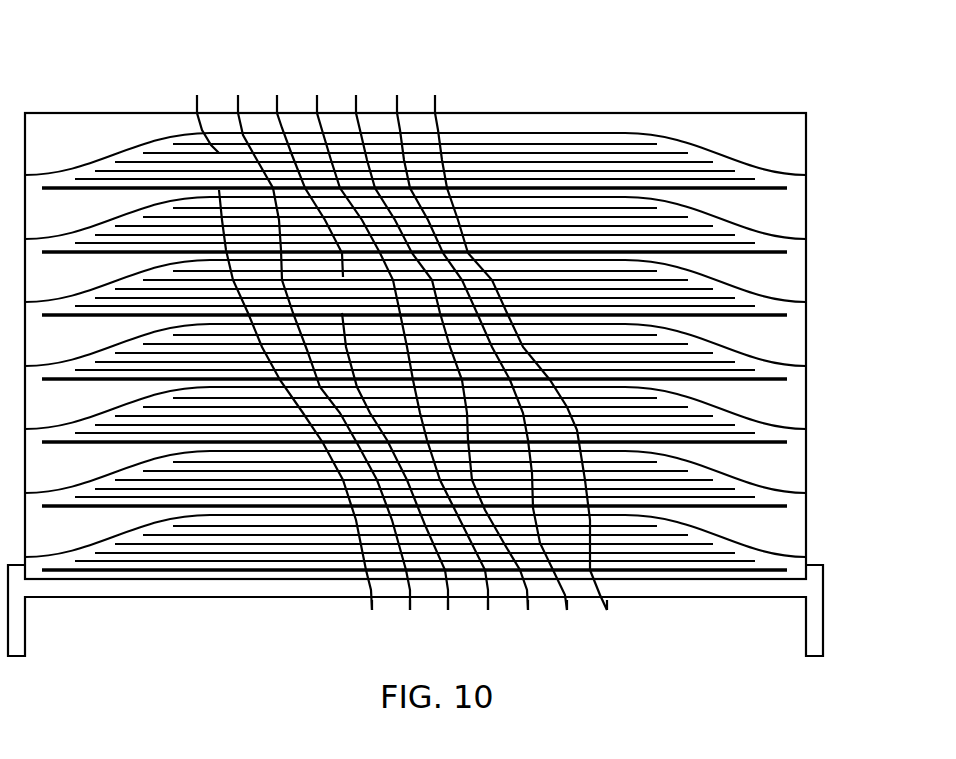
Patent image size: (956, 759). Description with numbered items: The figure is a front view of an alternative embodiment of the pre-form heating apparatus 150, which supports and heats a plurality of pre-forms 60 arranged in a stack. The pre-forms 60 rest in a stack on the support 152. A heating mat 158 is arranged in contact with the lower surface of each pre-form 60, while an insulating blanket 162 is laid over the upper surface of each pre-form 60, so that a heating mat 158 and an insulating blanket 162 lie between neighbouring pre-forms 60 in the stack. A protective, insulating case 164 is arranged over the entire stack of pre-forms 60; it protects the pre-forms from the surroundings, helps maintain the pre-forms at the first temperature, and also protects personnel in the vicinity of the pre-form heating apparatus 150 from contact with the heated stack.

The pre-form heating apparatus 150 is at (726, 105).
The support 152 is at (826, 597).
The heating mat 158 is at (490, 619).
The pre-form 60 is at (397, 341).
The insulating blanket 162 is at (104, 164).
The protective, insulating case 164 is at (108, 113).